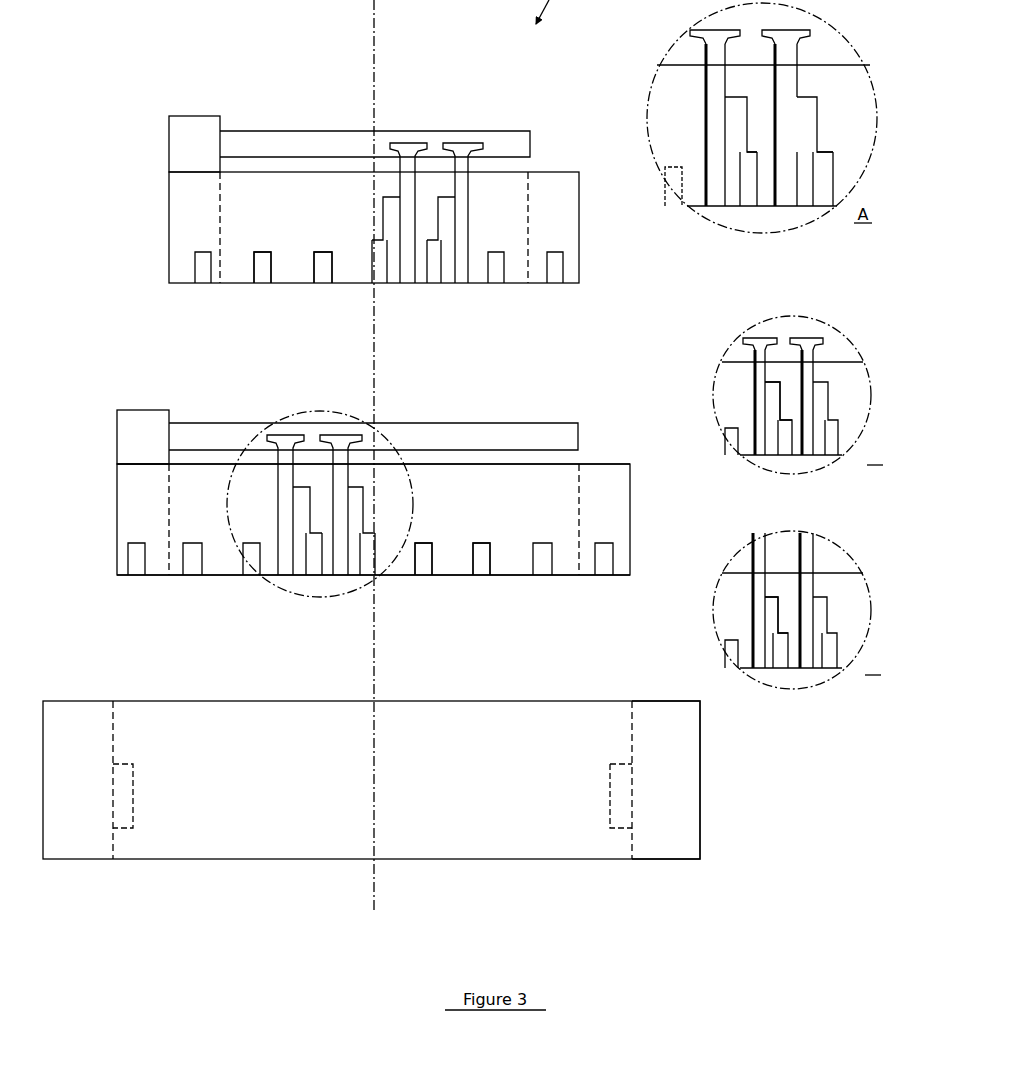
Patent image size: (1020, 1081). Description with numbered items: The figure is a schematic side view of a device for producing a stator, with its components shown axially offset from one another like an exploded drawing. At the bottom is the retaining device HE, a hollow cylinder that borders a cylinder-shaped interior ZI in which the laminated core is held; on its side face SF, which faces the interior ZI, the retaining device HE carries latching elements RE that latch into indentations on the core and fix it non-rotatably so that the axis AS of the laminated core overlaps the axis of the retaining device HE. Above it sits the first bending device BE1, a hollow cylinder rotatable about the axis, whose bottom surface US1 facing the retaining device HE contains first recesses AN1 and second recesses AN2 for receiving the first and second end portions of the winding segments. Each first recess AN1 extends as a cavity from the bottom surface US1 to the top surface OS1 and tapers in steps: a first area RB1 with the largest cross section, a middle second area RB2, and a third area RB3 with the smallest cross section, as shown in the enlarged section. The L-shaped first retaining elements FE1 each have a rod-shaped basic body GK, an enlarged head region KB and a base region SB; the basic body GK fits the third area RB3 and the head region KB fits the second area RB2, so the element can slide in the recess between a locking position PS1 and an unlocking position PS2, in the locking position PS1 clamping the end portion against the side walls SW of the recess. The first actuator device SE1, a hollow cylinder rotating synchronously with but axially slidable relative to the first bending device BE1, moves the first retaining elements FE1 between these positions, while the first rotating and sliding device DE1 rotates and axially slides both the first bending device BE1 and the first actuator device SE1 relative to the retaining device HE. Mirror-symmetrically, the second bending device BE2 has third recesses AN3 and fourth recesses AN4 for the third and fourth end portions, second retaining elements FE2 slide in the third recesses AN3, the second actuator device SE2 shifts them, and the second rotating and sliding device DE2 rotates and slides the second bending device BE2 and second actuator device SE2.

The axis of the laminated core AS is at (375, 35).
The second rotating and sliding device DE2 is at (188, 137).
The second actuator device SE2 is at (512, 129).
The second bending device BE2 is at (181, 214).
The second retaining elements FE2 is at (457, 145).
The third recesses AN3 is at (380, 268).
The fourth recesses AN4 is at (263, 268).
The first rotating and sliding device DE1 is at (140, 432).
The first actuator device SE1 is at (556, 440).
The first bending device BE1 is at (148, 530).
The top surface OS1 is at (600, 460).
The bottom surface US1 is at (520, 578).
The first retaining elements FE1 is at (340, 445).
The first recesses AN1 is at (316, 565).
The second recesses AN2 is at (425, 565).
The interior ZI is at (470, 815).
The side face SF is at (630, 735).
The retaining device HE is at (663, 768).
The latching elements RE is at (125, 803).
The base region SB is at (712, 42).
The basic body GK is at (717, 108).
The head region KB is at (718, 183).
The third area RB3 is at (795, 85).
The second area RB2 is at (805, 125).
The first area RB1 is at (832, 180).
The side walls SW is at (757, 165).
The locking position PS1 is at (743, 414).
The unlocking position PS2 is at (748, 624).